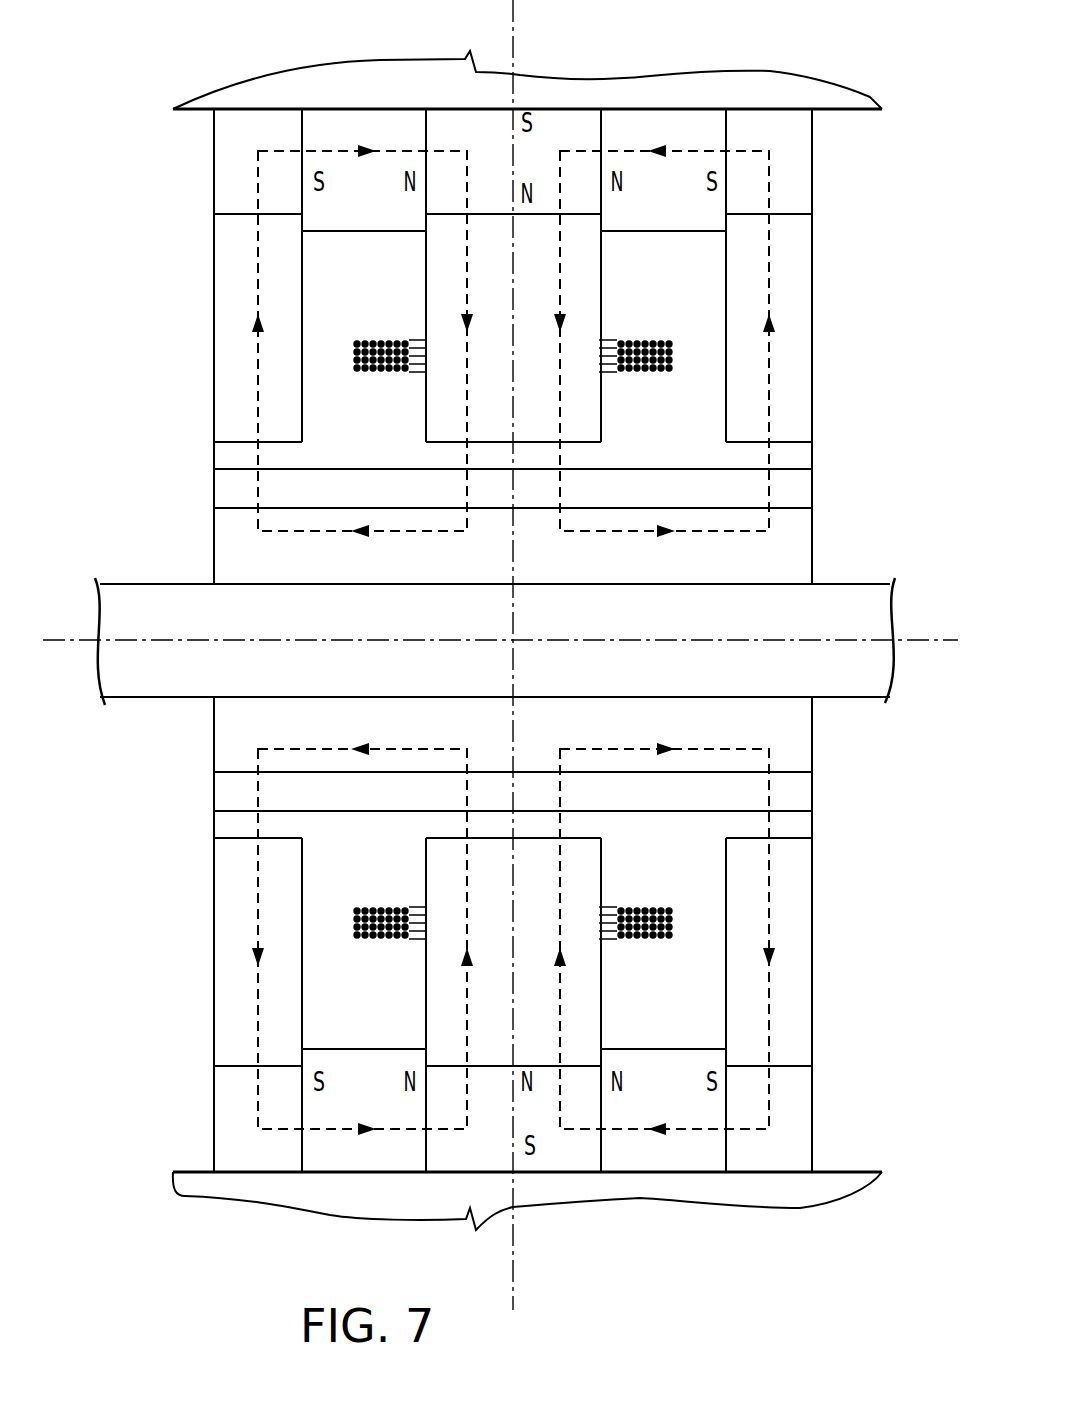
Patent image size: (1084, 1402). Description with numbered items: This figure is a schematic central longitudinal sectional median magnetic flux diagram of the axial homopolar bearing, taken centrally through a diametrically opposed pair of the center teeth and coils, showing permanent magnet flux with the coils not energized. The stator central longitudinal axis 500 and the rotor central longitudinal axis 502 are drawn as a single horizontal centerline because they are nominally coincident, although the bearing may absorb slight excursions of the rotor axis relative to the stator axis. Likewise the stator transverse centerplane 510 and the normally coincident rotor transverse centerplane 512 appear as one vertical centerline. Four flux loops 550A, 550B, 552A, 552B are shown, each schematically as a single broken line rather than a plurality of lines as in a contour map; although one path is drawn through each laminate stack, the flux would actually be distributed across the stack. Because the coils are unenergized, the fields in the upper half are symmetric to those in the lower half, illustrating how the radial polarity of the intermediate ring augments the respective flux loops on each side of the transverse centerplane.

The stator central longitudinal axis 500 is at (500, 687).
The rotor central longitudinal axis 502 is at (58, 642).
The stator transverse centerplane 510 is at (573, 665).
The rotor transverse centerplane 512 is at (513, 1280).
The flux loop 550A is at (258, 993).
The flux loop 550B is at (258, 285).
The flux loop 552A is at (769, 915).
The flux loop 552B is at (769, 398).